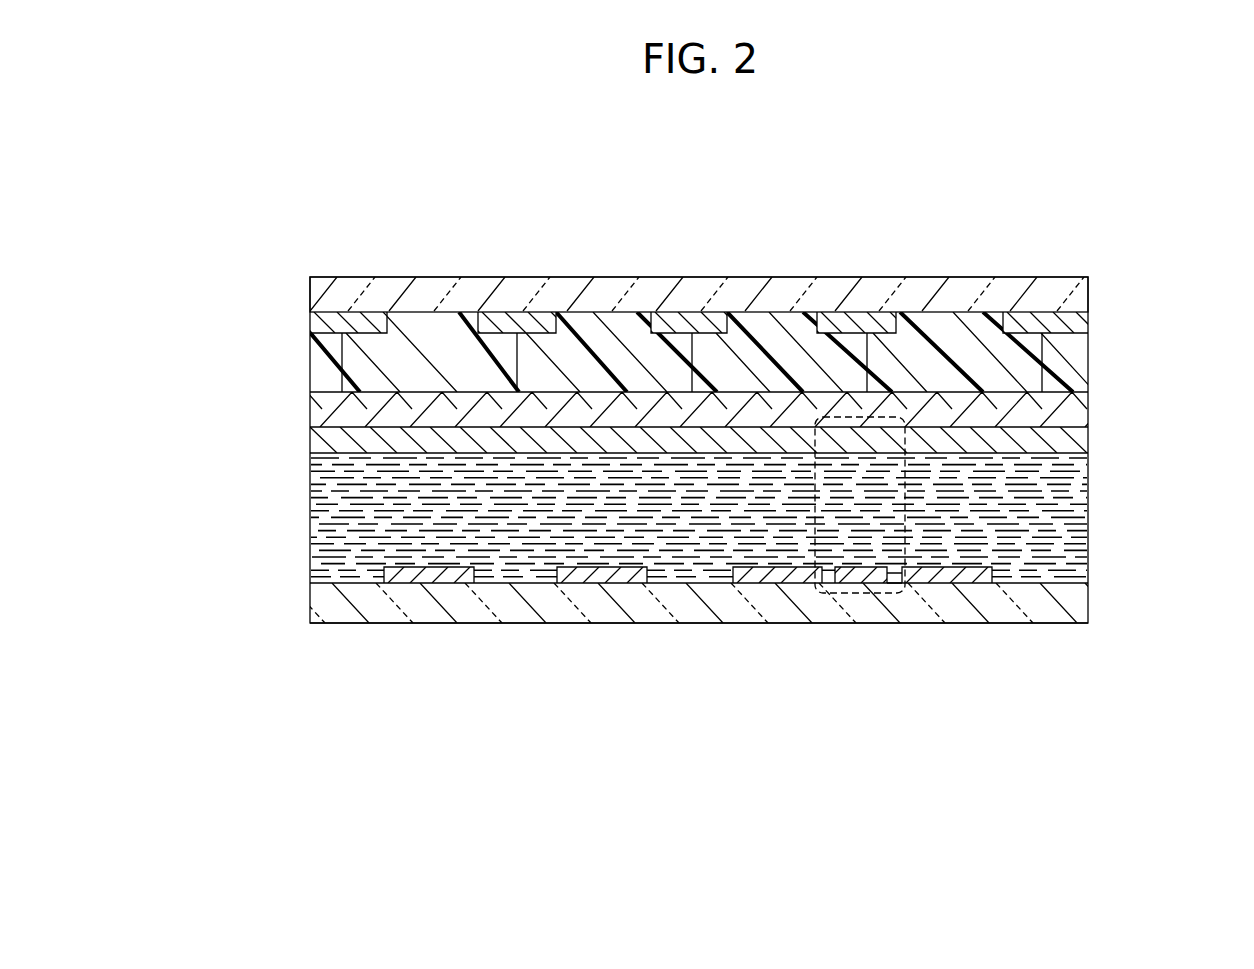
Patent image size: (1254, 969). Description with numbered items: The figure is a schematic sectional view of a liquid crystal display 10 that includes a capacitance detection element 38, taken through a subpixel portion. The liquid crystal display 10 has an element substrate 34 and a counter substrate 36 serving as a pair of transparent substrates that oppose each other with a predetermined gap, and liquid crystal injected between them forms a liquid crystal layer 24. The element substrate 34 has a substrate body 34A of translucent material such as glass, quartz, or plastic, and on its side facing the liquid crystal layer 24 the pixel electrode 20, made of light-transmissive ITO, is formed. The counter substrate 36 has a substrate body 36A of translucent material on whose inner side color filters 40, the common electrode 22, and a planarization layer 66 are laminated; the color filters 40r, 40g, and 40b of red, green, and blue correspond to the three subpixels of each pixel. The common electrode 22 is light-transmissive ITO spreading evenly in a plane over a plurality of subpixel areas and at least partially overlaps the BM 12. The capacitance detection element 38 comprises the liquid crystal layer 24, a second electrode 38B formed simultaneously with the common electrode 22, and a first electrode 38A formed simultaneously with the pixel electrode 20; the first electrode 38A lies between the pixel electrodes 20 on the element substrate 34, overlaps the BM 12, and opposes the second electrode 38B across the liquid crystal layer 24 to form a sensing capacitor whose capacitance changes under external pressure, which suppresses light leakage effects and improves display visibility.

The liquid crystal display 10 is at (1070, 186).
The counter substrate 36 is at (284, 299).
The substrate body 36A is at (1082, 297).
The BM 12 is at (1010, 322).
The color filters 40 is at (743, 297).
The red color filter 40r is at (443, 323).
The green color filter 40g is at (615, 322).
The blue color filter 40b is at (760, 322).
The planarization layer 66 is at (1080, 408).
The second electrode 38B is at (776, 438).
The common electrode 22 is at (1080, 437).
The liquid crystal layer 24 is at (315, 510).
The element substrate 34 is at (284, 611).
The substrate body 34A is at (1080, 607).
The pixel electrode 20 is at (980, 574).
The capacitance detection element 38 is at (852, 593).
The first electrode 38A is at (878, 577).